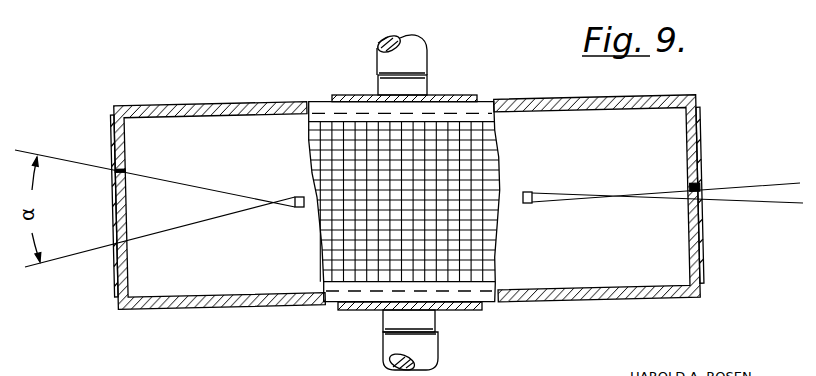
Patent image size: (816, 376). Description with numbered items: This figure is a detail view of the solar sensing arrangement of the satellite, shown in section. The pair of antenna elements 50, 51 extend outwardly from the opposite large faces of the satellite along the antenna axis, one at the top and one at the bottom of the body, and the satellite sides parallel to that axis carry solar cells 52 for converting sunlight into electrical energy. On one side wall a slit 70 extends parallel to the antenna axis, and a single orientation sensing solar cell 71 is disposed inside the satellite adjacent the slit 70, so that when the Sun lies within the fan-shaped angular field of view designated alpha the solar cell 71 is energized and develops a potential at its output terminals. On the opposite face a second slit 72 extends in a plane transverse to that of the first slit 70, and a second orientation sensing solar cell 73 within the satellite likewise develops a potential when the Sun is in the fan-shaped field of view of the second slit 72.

The antenna element 50 is at (418, 57).
The antenna element 51 is at (435, 322).
The solar cells 52 is at (107, 148).
The slit 70 is at (119, 236).
The orientation sensing solar cell 71 is at (304, 210).
The second slit 72 is at (700, 177).
The second orientation sensing solar cell 73 is at (530, 192).